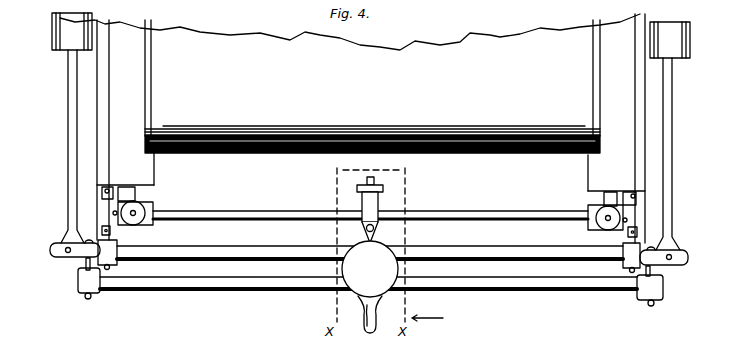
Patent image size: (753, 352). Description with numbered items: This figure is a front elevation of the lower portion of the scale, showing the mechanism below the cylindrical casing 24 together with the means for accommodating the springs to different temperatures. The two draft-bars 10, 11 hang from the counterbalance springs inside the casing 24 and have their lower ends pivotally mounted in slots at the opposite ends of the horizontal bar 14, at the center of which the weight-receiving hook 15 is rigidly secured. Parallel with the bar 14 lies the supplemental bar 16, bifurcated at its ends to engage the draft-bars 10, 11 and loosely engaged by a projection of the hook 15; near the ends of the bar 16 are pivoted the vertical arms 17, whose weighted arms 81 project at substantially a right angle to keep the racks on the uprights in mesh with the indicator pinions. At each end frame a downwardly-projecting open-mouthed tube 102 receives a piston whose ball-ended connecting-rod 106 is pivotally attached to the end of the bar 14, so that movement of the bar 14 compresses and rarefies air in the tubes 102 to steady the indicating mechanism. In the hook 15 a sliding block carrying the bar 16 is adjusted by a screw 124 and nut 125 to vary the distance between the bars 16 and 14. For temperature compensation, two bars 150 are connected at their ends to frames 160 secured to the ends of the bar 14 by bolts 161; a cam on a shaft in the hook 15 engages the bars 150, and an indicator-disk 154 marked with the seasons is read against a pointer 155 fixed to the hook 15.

The draft-bar 10 is at (103, 203).
The draft-bar 11 is at (640, 213).
The horizontal bar 14 is at (204, 252).
The weight-receiving hook 15 is at (370, 324).
The supplemental bar 16 is at (113, 213).
The vertical arm 17 is at (128, 194).
The cylindrical casing 24 is at (372, 105).
The weighted arm 81 is at (133, 225).
The open-mouthed tube 102 is at (55, 41).
The connecting-rod 106 is at (72, 94).
The screw 124 is at (375, 179).
The nut 125 is at (383, 190).
The compensating bar 150 is at (192, 283).
The indicator-disk 154 is at (370, 269).
The pointer 155 is at (376, 235).
The frame 160 is at (88, 284).
The bolt 161 is at (84, 266).